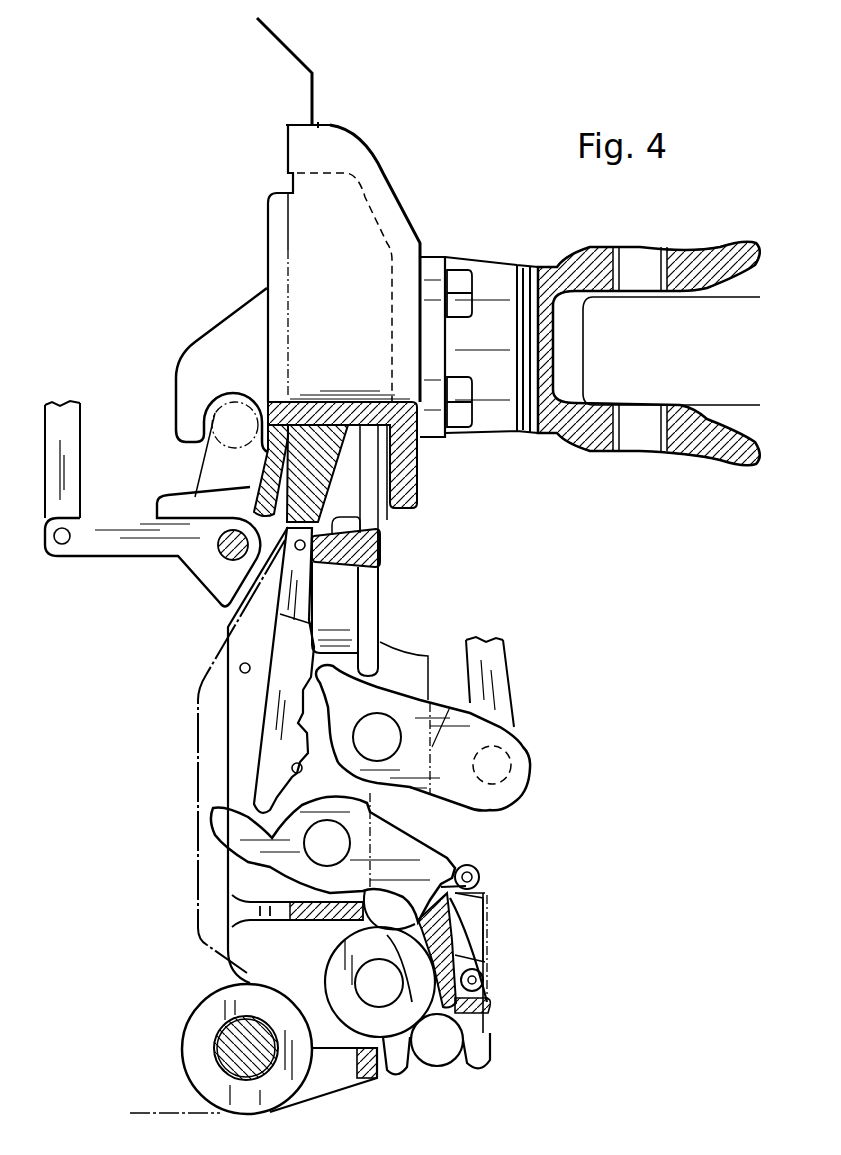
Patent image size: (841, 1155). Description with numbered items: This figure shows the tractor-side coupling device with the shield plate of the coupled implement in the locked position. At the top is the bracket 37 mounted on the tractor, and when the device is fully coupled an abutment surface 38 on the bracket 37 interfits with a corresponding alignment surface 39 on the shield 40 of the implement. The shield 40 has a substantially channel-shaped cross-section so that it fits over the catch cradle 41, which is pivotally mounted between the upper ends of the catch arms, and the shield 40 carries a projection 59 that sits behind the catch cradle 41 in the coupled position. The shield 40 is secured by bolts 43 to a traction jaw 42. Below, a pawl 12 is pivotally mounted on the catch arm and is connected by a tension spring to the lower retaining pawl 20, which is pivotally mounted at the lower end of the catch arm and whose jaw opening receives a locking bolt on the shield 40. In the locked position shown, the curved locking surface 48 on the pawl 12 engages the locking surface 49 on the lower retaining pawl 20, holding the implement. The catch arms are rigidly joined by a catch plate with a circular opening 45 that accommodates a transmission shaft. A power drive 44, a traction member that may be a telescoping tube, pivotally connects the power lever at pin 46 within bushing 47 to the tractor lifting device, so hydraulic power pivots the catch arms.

The pawl 12 is at (403, 847).
The lower retaining pawl 20 is at (485, 958).
The bracket 37 is at (288, 55).
The abutment surface 38 is at (305, 125).
The alignment surface 39 is at (323, 123).
The shield 40 is at (310, 235).
The catch cradle 41 is at (263, 392).
The traction jaw 42 is at (503, 430).
The bolts 43 is at (458, 422).
The power drive 44 is at (487, 668).
The circular opening 45 is at (363, 660).
The pin 46 is at (497, 762).
The bushing 47 is at (502, 782).
The curved locking surface 48 is at (482, 884).
The locking surface 49 is at (413, 922).
The projection 59 is at (268, 493).